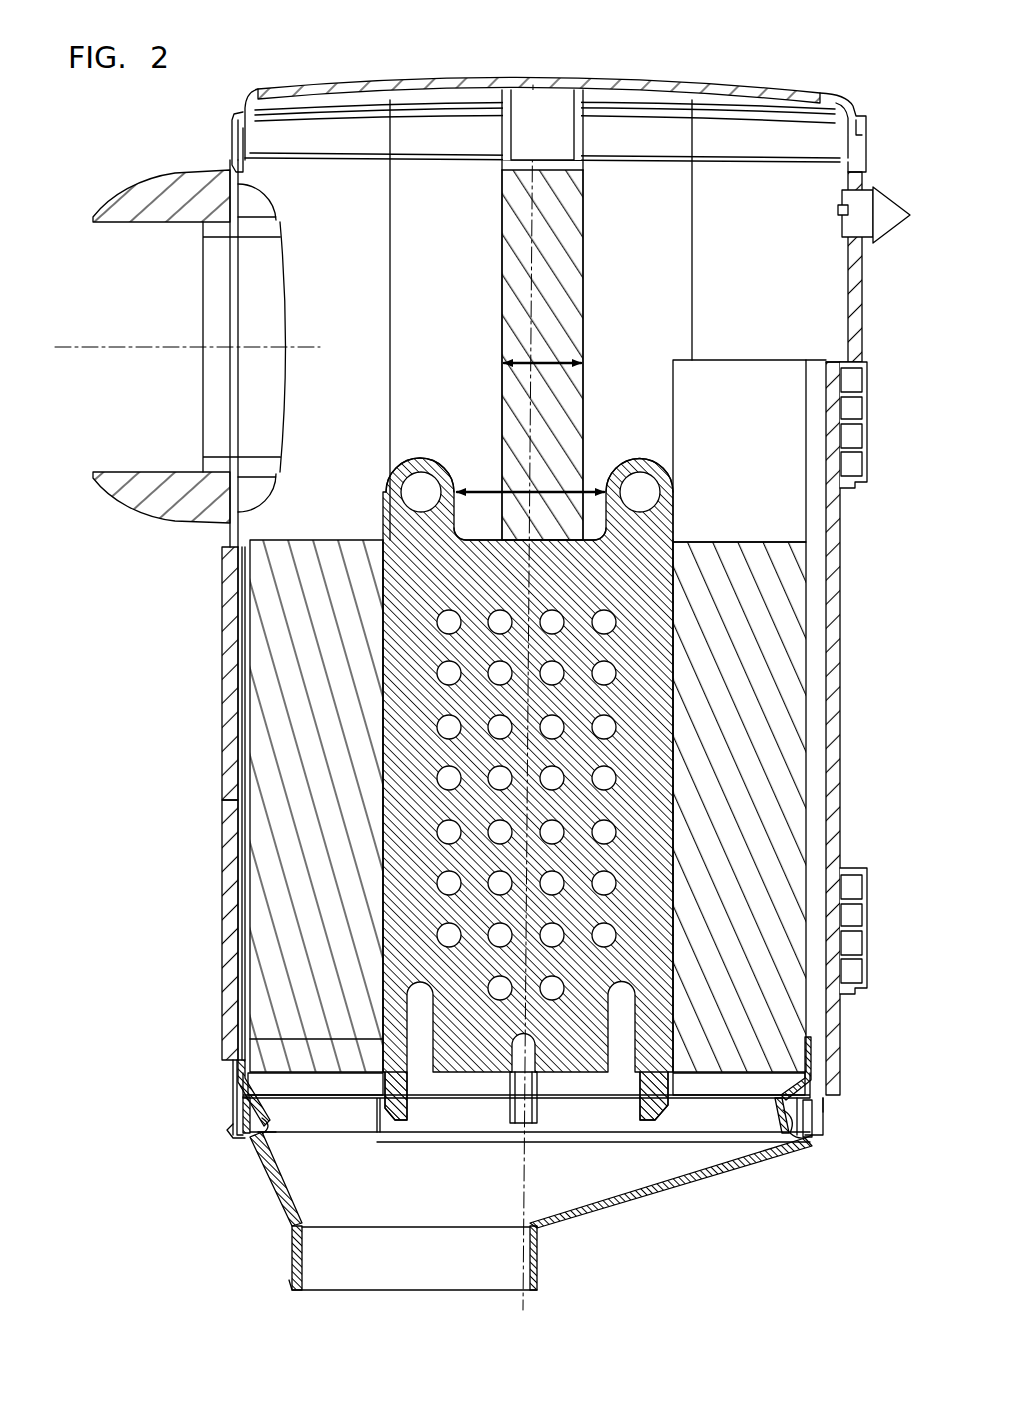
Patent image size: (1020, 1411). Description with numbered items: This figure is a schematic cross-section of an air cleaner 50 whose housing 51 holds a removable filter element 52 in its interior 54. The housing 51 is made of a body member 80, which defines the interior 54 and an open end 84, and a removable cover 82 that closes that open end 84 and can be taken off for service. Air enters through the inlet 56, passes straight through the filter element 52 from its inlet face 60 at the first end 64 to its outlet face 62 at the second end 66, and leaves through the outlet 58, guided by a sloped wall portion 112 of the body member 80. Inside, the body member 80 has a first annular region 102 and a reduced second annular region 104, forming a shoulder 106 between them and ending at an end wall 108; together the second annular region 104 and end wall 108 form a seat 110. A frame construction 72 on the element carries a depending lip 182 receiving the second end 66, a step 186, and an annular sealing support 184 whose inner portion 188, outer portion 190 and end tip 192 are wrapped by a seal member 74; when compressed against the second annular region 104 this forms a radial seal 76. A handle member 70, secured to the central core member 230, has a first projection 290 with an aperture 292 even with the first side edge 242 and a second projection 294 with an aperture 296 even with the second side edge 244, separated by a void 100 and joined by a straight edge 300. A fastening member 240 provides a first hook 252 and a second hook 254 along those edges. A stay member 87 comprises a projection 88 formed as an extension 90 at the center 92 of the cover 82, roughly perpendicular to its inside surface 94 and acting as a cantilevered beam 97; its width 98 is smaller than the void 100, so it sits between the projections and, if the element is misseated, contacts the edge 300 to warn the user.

The air cleaner 50 is at (245, 78).
The housing 51 is at (150, 150).
The filter element 52 is at (293, 532).
The interior 54 is at (238, 618).
The inlet 56 is at (127, 470).
The outlet 58 is at (302, 1258).
The inlet face 60 is at (737, 542).
The outlet face 62 is at (717, 1073).
The first end 64 is at (335, 540).
The second end 66 is at (335, 1080).
The handle member 70 is at (405, 455).
The frame construction 72 is at (236, 1061).
The seal member 74 is at (250, 1122).
The radial seal 76 is at (232, 1118).
The body member 80 is at (841, 728).
The cover 82 is at (393, 90).
The open end 84 is at (847, 150).
The stay member 87 is at (478, 258).
The projection 88 is at (618, 258).
The extension 90 is at (505, 435).
The center 92 is at (542, 90).
The inside surface 94 is at (650, 100).
The cantilevered beam 97 is at (584, 308).
The width 98 is at (568, 360).
The void 100 is at (556, 492).
The first annular region 102 is at (238, 900).
The second annular region 104 is at (817, 1125).
The shoulder 106 is at (812, 1095).
The end wall 108 is at (798, 1137).
The seat 110 is at (845, 1108).
The sloped wall portion 112 is at (272, 1195).
The depending lip 182 is at (812, 1051).
The sealing support 184 is at (778, 1118).
The step 186 is at (232, 1088).
The inner portion 188 is at (268, 1115).
The outer portion 190 is at (272, 1132).
The end tip 192 is at (786, 1124).
The central core member 230 is at (674, 690).
The fastening member 240 is at (630, 1109).
The first side edge 242 is at (383, 815).
The second side edge 244 is at (674, 796).
The first hook 252 is at (404, 1108).
The second hook 254 is at (644, 1112).
The first projection 290 is at (398, 472).
The aperture 292 is at (421, 492).
The second projection 294 is at (660, 470).
The aperture 296 is at (640, 492).
The straight edge 300 is at (492, 541).